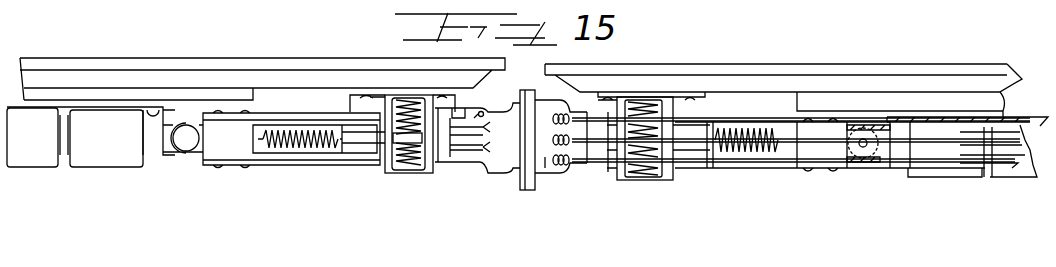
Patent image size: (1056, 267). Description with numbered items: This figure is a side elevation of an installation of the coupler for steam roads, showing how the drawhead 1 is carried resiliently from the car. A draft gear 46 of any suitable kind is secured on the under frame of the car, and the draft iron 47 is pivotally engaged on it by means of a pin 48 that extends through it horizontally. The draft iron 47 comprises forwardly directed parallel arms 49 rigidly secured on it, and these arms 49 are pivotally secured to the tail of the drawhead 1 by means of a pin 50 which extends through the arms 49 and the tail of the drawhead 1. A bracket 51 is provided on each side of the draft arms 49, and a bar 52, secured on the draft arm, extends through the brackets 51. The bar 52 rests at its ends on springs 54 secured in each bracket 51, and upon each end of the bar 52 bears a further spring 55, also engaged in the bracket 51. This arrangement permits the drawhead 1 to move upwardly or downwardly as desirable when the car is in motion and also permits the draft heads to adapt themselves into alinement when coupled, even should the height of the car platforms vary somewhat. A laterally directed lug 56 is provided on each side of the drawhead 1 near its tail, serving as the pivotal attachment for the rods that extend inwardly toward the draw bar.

The drawhead 1 is at (514, 160).
The draft gear 46 is at (133, 147).
The draft iron 47 is at (234, 143).
The pin 48 is at (187, 142).
The draft arms 49 is at (367, 128).
The pin 50 is at (448, 108).
The bracket 51 is at (417, 168).
The bar 52 is at (402, 133).
The spring 54 is at (422, 168).
The spring 55 is at (410, 110).
The laterally directed lug 56 is at (481, 112).